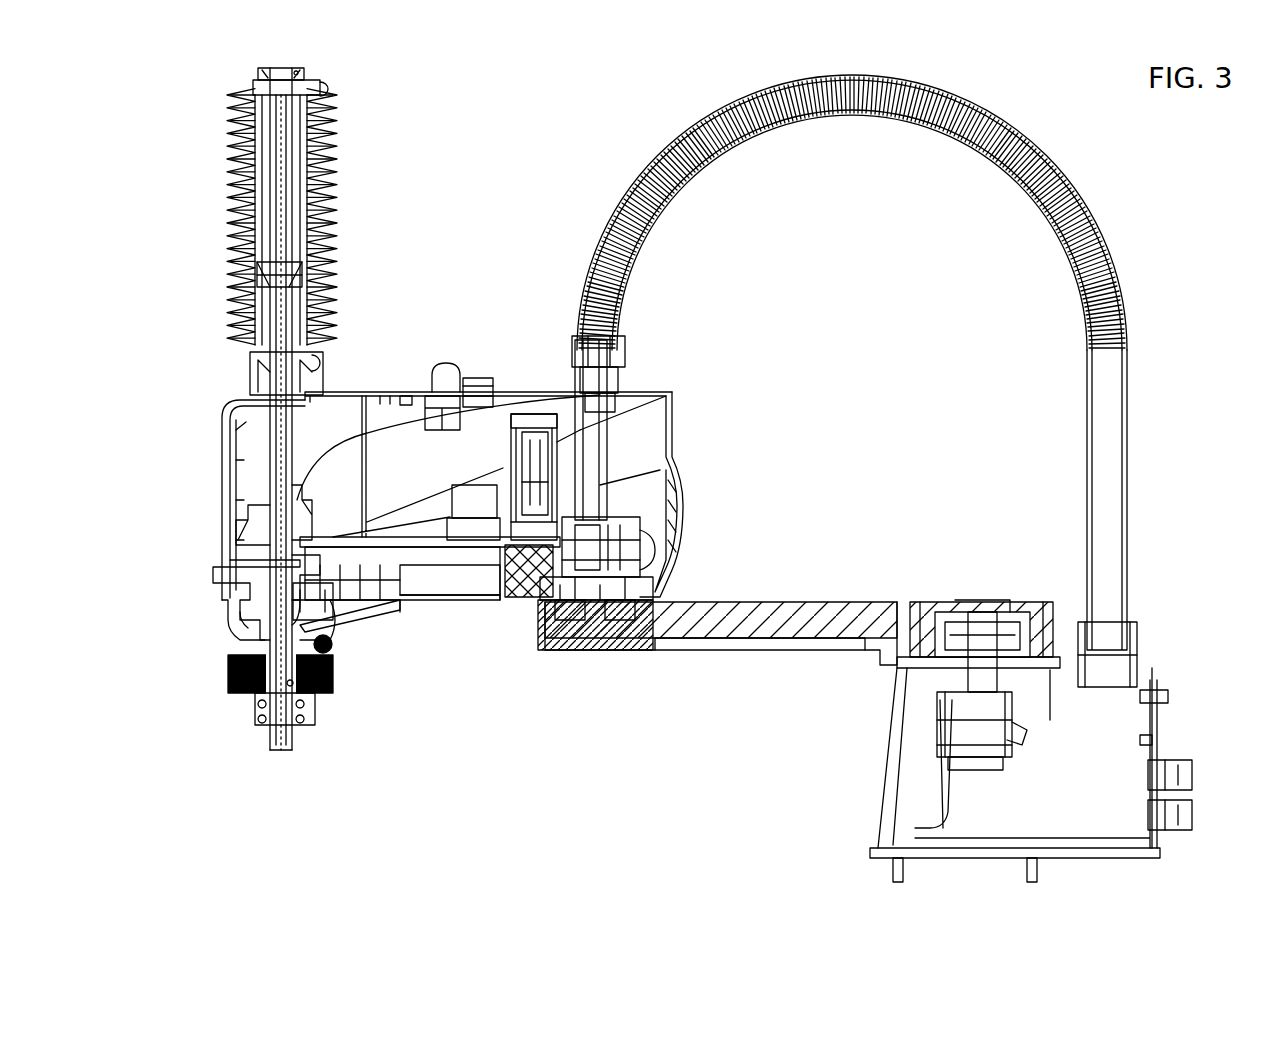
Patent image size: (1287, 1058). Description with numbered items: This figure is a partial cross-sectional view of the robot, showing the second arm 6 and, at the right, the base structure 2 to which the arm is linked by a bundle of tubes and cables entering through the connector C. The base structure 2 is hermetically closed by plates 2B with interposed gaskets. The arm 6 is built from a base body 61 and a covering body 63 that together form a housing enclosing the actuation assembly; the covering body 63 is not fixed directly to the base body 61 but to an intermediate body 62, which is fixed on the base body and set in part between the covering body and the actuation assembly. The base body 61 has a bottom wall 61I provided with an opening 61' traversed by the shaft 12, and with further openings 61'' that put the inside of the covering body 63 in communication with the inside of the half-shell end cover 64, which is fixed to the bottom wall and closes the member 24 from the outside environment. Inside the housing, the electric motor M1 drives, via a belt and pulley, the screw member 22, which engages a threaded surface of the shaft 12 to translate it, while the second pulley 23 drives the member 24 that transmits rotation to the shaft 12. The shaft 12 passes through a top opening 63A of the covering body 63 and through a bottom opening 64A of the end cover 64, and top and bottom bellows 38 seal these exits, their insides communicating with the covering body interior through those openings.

The bellows 38 is at (338, 165).
The shaft 12 is at (305, 730).
The second arm 6 is at (710, 478).
The top opening 63A is at (240, 392).
The covering body 63 is at (678, 420).
The base body 61 is at (653, 583).
The intermediate body 62 is at (531, 408).
The electric motor M1 is at (540, 447).
The connector C is at (638, 358).
The base structure 2 is at (1162, 855).
The plates 2B is at (1162, 750).
The screw member 22 is at (248, 528).
The second pulley 23 is at (232, 598).
The member 24 is at (252, 637).
The opening 61' is at (313, 630).
The openings 61'' is at (400, 644).
The bottom wall 61I is at (470, 598).
The half-shell end cover 64 is at (345, 638).
The bottom opening 64A is at (322, 690).